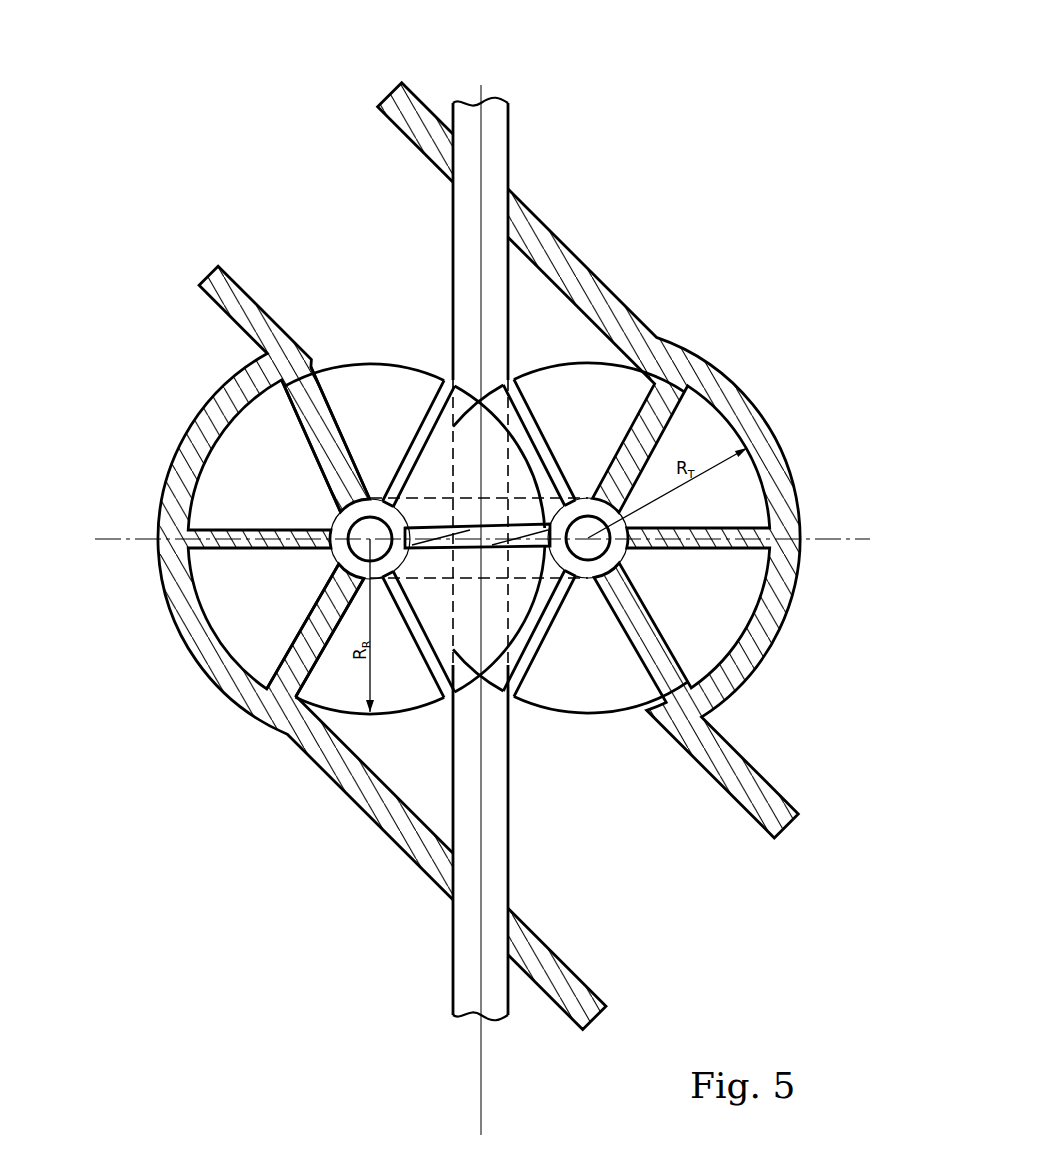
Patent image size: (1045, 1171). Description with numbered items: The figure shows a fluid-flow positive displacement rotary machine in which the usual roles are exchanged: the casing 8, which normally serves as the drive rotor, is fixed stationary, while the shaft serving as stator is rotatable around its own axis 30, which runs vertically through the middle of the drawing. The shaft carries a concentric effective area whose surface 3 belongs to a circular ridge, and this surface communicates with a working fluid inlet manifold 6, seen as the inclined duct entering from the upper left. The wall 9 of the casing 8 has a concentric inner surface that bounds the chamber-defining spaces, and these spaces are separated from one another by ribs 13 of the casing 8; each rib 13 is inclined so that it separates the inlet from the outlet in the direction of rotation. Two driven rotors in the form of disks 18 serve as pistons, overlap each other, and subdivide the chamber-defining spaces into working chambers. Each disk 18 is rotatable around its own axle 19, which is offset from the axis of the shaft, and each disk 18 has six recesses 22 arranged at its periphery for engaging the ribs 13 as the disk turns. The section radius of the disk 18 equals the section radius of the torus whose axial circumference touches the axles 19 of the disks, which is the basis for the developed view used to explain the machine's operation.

The surface of a circular ridge 3 is at (618, 562).
The working fluid inlet manifold 6 is at (333, 240).
The casing 8 is at (778, 493).
The wall 9 is at (250, 660).
The rib 13 is at (310, 445).
The disk 18 is at (273, 572).
The axle 19 is at (362, 539).
The recess 22 is at (290, 652).
The axis 30 is at (465, 965).